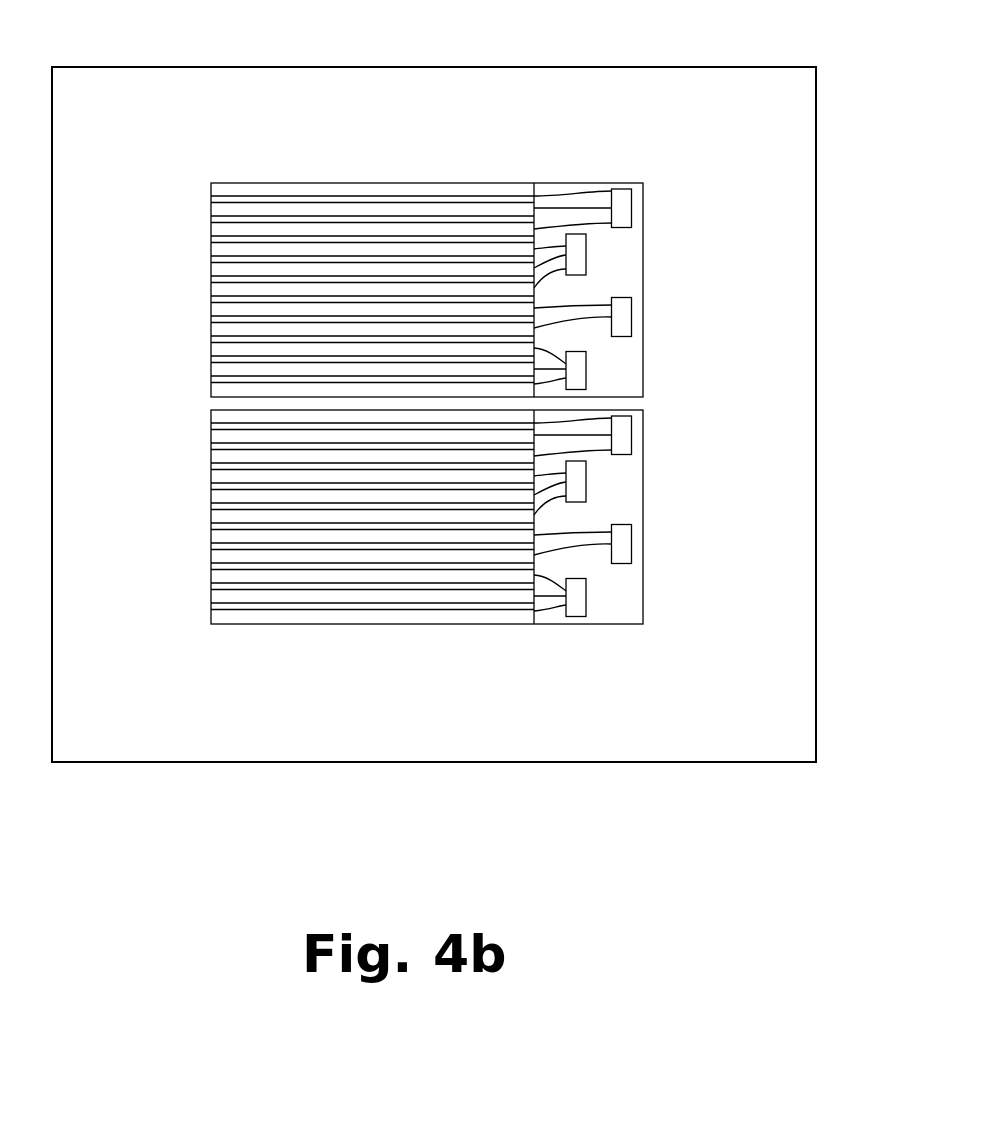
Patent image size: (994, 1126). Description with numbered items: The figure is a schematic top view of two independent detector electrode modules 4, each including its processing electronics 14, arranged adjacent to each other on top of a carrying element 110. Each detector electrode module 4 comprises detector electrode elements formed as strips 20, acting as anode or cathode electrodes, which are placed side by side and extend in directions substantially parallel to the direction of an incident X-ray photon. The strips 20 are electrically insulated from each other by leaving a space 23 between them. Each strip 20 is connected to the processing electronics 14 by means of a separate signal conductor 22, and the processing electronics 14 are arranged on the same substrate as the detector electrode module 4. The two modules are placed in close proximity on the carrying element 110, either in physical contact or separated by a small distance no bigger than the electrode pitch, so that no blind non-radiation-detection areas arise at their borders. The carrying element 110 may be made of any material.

The detector electrode module 4 is at (388, 115).
The processing electronics 14 is at (632, 203).
The strips 20 is at (219, 331).
The signal conductor 22 is at (577, 192).
The space 23 is at (211, 255).
The carrying element 110 is at (756, 732).